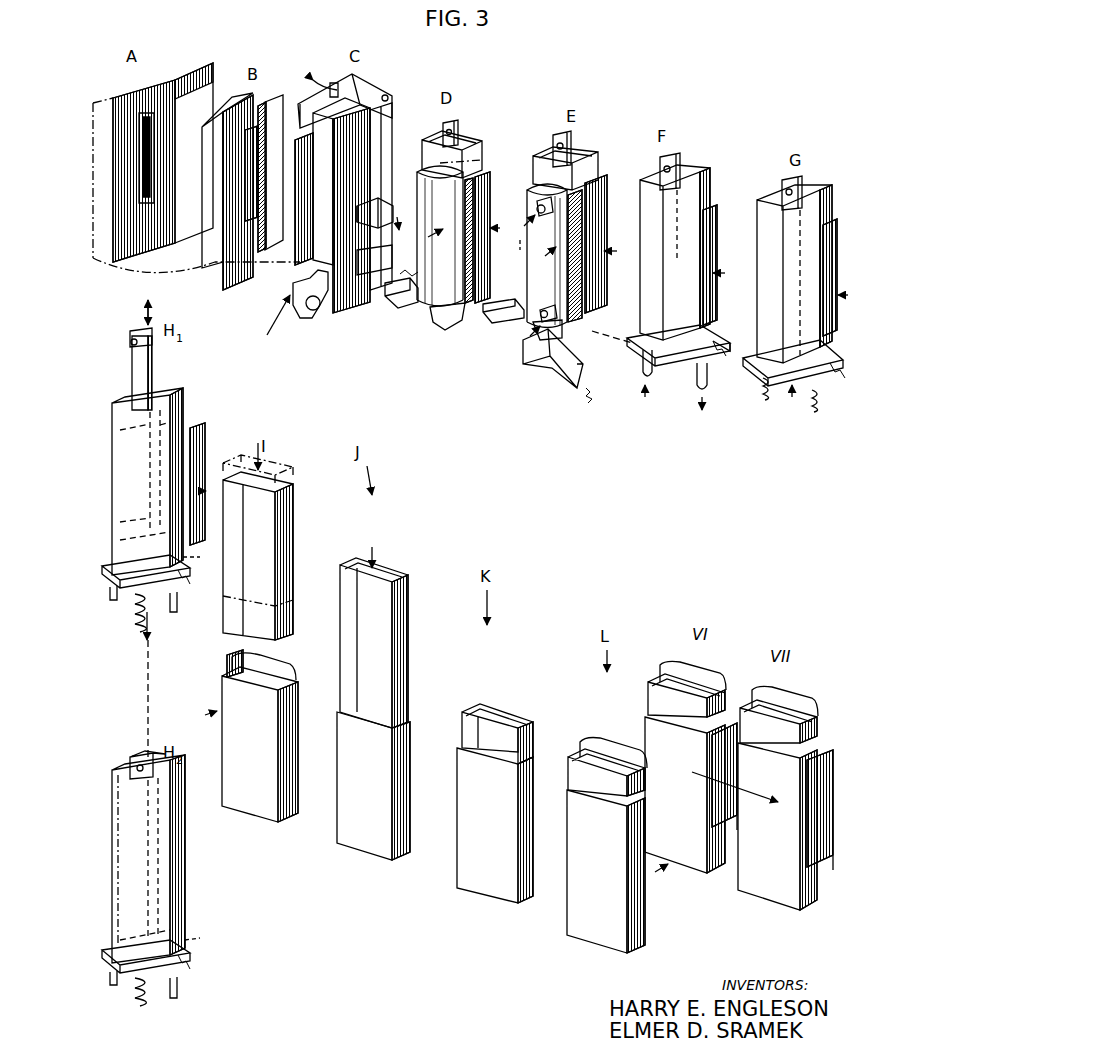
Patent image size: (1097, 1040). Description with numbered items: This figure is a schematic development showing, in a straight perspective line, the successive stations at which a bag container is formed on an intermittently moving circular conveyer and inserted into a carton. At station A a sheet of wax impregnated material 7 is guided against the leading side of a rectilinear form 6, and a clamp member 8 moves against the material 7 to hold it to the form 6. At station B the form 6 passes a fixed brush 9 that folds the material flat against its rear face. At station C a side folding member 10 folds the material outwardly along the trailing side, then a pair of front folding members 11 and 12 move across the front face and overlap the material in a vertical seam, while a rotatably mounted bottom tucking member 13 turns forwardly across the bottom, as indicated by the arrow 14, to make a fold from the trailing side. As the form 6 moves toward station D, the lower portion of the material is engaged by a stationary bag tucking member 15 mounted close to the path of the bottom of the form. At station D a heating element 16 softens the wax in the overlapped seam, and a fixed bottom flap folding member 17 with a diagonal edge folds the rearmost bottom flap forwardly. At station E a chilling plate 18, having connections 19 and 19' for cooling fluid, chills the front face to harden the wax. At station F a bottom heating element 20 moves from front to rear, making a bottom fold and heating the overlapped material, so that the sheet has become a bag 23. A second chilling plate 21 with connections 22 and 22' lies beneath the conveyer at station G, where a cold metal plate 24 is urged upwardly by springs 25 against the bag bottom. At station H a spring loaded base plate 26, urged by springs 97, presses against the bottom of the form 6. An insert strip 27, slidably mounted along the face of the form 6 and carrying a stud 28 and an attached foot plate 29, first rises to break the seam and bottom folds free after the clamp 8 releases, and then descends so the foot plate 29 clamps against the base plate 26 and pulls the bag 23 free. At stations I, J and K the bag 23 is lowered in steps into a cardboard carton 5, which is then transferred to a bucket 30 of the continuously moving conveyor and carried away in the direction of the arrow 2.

The direction arrow 2 is at (752, 800).
The cardboard carton 5 is at (258, 818).
The form 6 is at (95, 232).
The wax impregnated material 7 is at (172, 75).
The clamp member 8 is at (147, 95).
The brush 9 is at (279, 96).
The side folding member 10 is at (335, 85).
The front folding member 11 is at (300, 260).
The front folding member 12 is at (370, 295).
The bottom tucking member 13 is at (305, 318).
The arrow 14 is at (269, 323).
The block 15 is at (395, 305).
The heating element 16 is at (465, 165).
The bottom flap folding member 17 is at (496, 318).
The chilling plate 18 is at (533, 236).
The connection 19 is at (525, 208).
The connection 19' is at (531, 309).
The bottom heating element 20 is at (538, 356).
The second chilling plate 21 is at (675, 350).
The connection 22 is at (635, 380).
The connection 22' is at (717, 398).
The bag 23 is at (760, 198).
The cold metal plate 24 is at (762, 386).
The springs 25 is at (815, 406).
The spring loaded base plate 26 is at (178, 590).
The insert strip 27 is at (572, 148).
The stud 28 is at (152, 344).
The foot plate 29 is at (204, 749).
The buckets 30 is at (725, 766).
The springs 97 is at (136, 616).